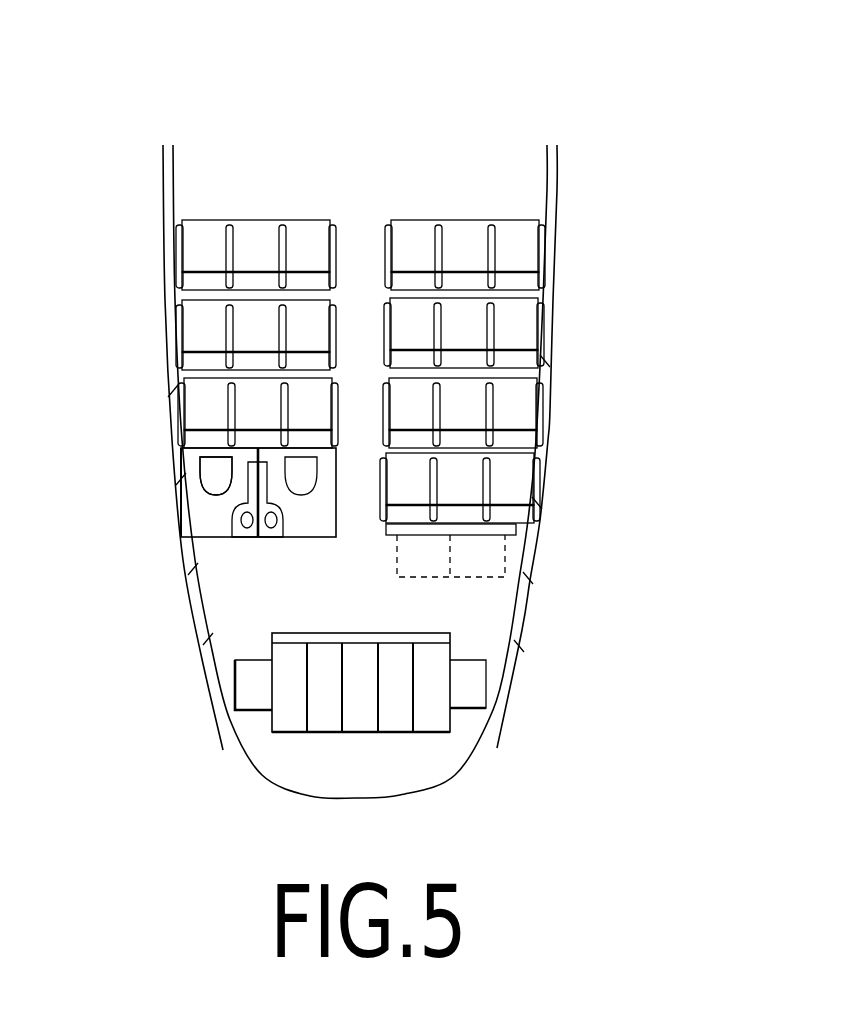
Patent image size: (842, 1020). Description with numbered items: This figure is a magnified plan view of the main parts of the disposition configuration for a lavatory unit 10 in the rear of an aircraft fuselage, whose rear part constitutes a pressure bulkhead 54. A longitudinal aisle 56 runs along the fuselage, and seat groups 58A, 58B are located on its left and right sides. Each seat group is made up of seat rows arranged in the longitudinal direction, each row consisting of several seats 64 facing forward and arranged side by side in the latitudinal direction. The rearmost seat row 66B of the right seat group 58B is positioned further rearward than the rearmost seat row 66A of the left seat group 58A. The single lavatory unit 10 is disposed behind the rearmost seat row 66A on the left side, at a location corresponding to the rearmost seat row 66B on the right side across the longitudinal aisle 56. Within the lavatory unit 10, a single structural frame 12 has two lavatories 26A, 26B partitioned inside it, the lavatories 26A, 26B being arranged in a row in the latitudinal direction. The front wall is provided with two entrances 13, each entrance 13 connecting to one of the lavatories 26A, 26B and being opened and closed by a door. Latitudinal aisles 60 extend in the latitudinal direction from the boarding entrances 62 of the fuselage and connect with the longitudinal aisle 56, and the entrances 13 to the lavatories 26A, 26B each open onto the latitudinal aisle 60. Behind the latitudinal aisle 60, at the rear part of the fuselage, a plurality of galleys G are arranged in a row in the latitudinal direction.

The lavatory unit 10 is at (180, 465).
The structural frame 12 is at (180, 507).
The entrance 13 is at (222, 540).
The lavatory 26A is at (205, 520).
The lavatory 26B is at (265, 600).
The pressure bulkhead 54 is at (384, 790).
The longitudinal aisle 56 is at (365, 375).
The seat group 58A is at (265, 140).
The seat group 58B is at (444, 137).
The latitudinal aisle 60 is at (385, 606).
The boarding entrance 62 is at (195, 600).
The seat 64 is at (205, 225).
The rearmost seat row 66A is at (180, 392).
The rearmost seat row 66B is at (540, 490).
The galley G is at (356, 735).